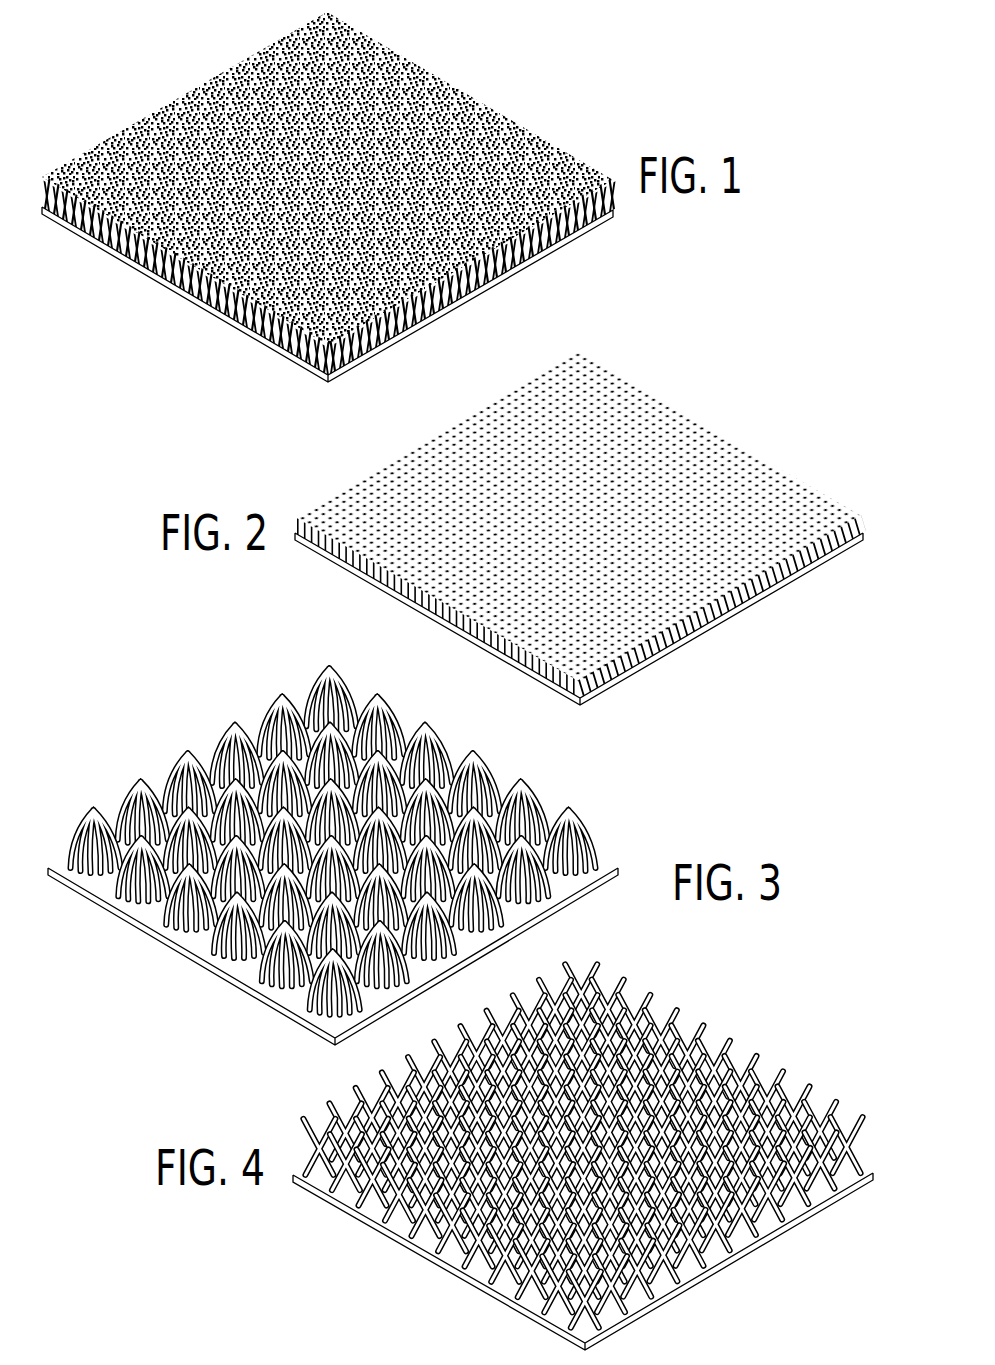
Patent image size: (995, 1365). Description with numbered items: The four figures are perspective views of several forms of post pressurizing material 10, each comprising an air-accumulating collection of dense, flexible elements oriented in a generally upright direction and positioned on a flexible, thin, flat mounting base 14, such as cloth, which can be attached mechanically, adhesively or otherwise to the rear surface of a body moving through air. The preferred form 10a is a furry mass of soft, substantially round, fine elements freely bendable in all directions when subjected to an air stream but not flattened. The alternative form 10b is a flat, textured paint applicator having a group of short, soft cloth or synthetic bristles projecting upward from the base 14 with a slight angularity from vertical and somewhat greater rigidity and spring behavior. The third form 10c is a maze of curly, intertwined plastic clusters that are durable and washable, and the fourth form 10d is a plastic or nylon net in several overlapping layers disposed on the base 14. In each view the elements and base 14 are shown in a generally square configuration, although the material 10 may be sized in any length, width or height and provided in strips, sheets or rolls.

In FIG. 1, the post pressurizing material 10 is at (328, 192).
In FIG. 2, the post pressurizing material 10 is at (579, 505).
In FIG. 3, the post pressurizing material 10 is at (333, 845).
In FIG. 4, the post pressurizing material 10 is at (583, 1155).
In FIG. 1, the furry mass post pressurizing material 10a is at (500, 117).
In FIG. 2, the bristle post pressurizing material 10b is at (750, 460).
In FIG. 3, the curly cluster post pressurizing material 10c is at (517, 803).
In FIG. 4, the net post pressurizing material 10d is at (718, 1078).
In FIG. 1, the mounting base 14 is at (463, 295).
In FIG. 2, the mounting base 14 is at (725, 620).
In FIG. 3, the mounting base 14 is at (515, 930).
In FIG. 4, the mounting base 14 is at (777, 1233).